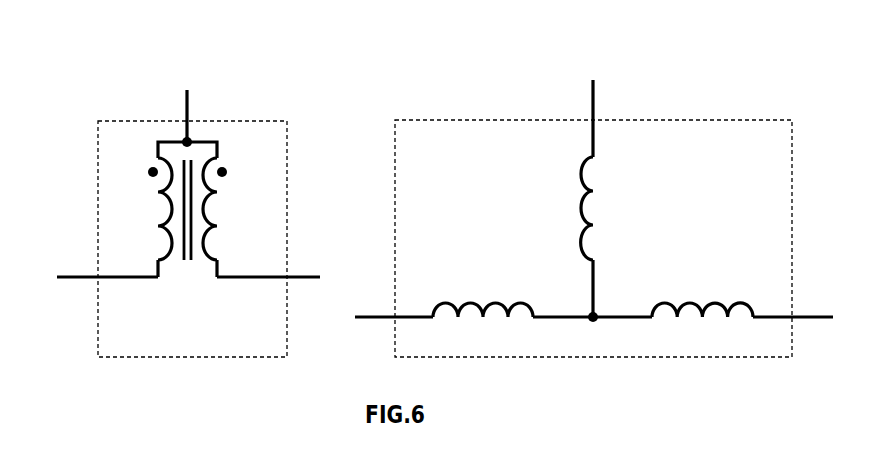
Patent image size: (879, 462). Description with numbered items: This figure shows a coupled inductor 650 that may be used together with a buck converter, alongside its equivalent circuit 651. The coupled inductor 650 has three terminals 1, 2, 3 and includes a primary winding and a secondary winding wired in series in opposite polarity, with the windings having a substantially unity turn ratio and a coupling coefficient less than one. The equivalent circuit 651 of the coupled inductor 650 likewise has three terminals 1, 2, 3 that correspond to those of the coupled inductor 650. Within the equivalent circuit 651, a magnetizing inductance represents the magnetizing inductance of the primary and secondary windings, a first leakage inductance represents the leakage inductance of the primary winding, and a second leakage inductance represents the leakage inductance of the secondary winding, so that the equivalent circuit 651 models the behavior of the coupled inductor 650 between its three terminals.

The coupled inductor 650 is at (98, 123).
The equivalent circuit 651 is at (395, 115).
The terminal 1 is at (383, 118).
The terminal 2 is at (245, 282).
The terminal 3 is at (525, 282).